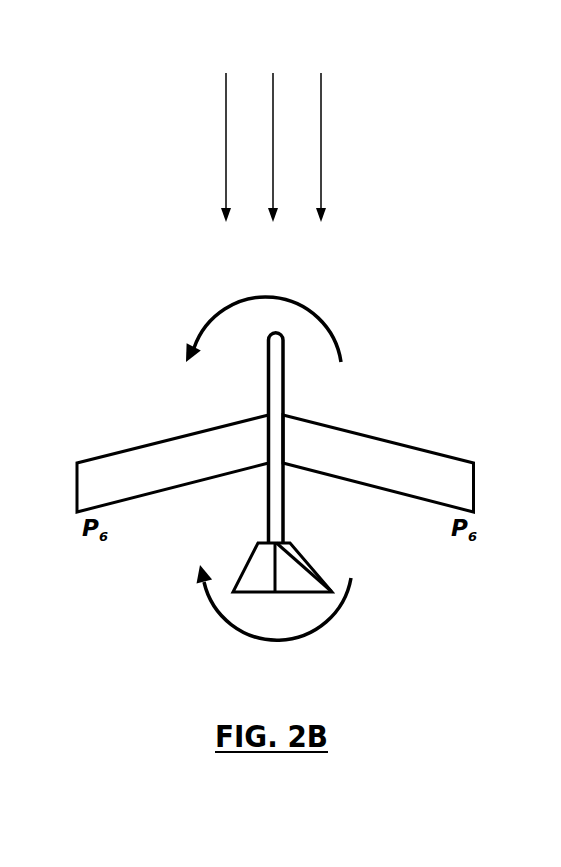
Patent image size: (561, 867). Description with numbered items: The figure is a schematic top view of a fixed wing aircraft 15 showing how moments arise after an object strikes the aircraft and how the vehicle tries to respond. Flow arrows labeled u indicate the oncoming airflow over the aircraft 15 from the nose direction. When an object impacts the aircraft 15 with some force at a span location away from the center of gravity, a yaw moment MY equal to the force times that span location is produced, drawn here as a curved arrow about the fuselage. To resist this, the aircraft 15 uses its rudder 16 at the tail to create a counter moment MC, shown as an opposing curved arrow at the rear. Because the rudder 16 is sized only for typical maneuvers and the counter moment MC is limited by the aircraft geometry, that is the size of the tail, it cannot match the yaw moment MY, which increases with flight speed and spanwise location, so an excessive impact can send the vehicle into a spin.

The aircraft 15 is at (67, 459).
The rudder 16 is at (304, 547).
The incoming flow velocity u is at (273, 133).
The yaw moment MY is at (263, 308).
The counter moment MC is at (274, 626).